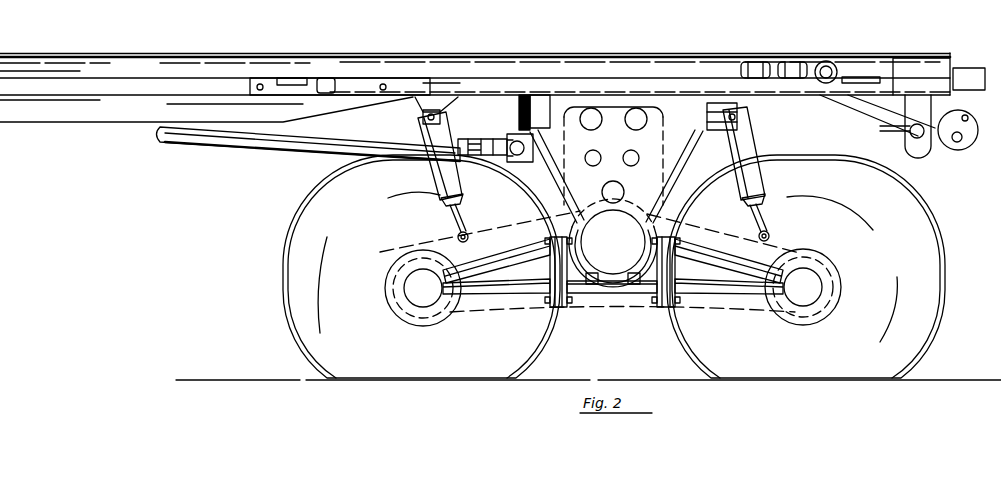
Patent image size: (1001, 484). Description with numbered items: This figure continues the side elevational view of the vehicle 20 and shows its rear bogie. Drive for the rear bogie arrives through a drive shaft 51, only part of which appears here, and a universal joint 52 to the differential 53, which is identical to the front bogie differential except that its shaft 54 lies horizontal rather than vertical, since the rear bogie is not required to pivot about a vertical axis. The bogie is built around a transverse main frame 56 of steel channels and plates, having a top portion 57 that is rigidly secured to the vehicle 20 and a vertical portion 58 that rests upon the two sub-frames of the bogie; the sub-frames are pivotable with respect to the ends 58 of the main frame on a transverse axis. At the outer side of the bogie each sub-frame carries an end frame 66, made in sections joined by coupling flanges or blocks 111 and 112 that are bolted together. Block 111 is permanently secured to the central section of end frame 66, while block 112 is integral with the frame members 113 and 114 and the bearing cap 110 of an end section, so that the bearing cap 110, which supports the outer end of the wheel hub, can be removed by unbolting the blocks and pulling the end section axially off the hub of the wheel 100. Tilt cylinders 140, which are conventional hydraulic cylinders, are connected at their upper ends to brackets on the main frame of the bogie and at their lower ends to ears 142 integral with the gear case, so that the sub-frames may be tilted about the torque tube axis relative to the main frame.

The vehicle frame 20 is at (175, 54).
The drive shaft 51 is at (253, 150).
The universal joint 52 is at (508, 138).
The differential 53 is at (672, 151).
The shaft 54 is at (541, 160).
The transverse main frame 56 is at (736, 101).
The top portion 57 is at (519, 105).
The vertical portion 58 is at (672, 178).
The end frame 66 is at (617, 295).
The wheel 100 is at (302, 248).
The bearing cap 110 is at (412, 295).
The coupling flange 111 is at (660, 307).
The coupling flange 112 is at (673, 300).
The frame member 113 is at (507, 297).
The frame member 114 is at (514, 262).
The tilt cylinder 140 is at (443, 128).
The ear 142 is at (469, 236).